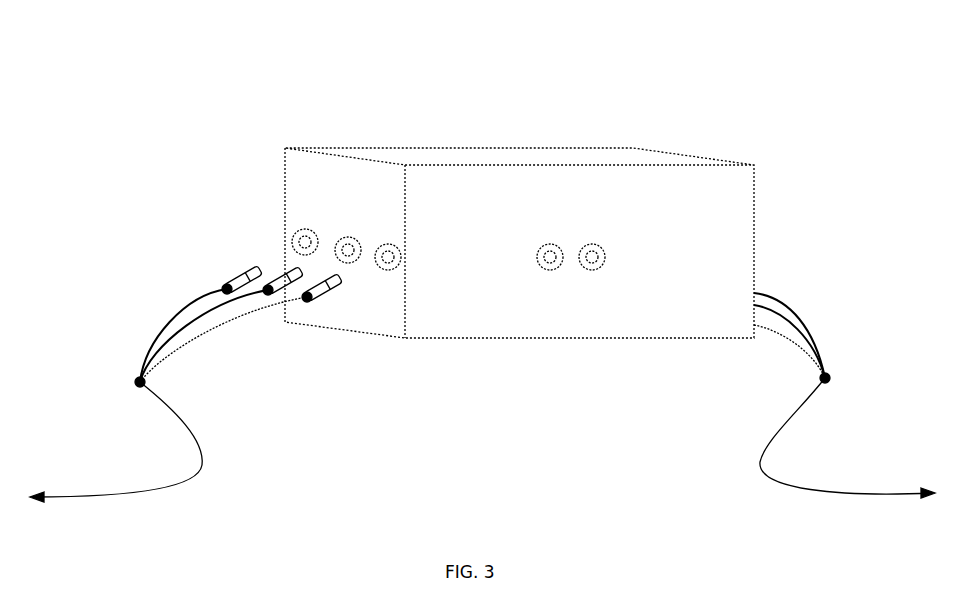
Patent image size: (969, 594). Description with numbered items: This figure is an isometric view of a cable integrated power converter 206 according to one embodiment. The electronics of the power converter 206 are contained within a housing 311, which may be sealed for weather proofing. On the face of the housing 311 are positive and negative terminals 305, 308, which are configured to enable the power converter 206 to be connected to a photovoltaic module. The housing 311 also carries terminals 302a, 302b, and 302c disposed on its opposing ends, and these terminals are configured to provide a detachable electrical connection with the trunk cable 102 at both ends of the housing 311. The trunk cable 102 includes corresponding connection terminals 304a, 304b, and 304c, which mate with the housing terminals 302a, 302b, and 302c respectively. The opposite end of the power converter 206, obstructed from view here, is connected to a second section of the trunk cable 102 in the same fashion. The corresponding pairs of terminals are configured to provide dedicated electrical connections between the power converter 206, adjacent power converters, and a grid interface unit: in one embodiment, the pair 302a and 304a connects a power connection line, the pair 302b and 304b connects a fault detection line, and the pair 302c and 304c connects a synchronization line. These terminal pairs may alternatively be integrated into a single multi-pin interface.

The power converter 206 is at (505, 104).
The housing 311 is at (565, 338).
The terminal 302a is at (308, 229).
The terminal 302b is at (352, 237).
The terminal 302c is at (391, 244).
The positive terminal 305 is at (553, 244).
The negative terminal 308 is at (599, 245).
The connection terminal 304a is at (233, 280).
The connection terminal 304b is at (277, 273).
The connection terminal 304c is at (327, 275).
The trunk cable 102 is at (202, 450).